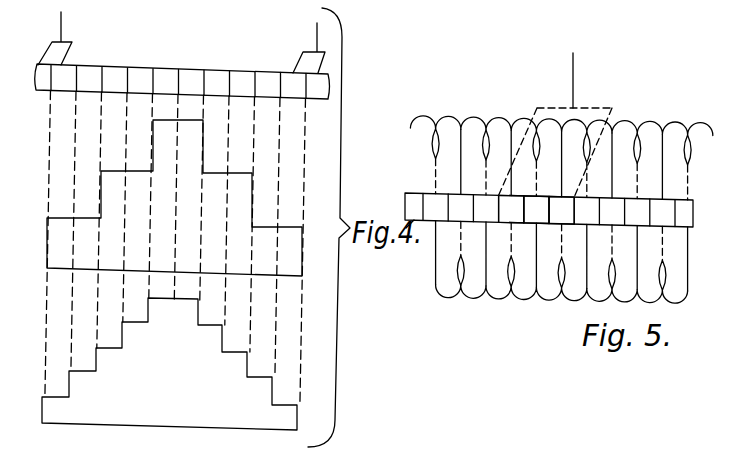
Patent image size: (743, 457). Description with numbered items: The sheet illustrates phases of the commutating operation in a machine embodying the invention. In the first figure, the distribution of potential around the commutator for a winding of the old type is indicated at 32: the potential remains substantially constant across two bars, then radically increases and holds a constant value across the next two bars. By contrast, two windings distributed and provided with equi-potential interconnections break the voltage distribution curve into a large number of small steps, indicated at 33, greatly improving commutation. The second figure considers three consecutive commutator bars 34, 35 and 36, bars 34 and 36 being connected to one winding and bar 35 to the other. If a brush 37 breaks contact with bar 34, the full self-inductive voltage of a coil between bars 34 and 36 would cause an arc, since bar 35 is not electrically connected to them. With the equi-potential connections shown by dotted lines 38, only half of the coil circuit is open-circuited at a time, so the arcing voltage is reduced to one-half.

In FIG. 4, the potential distribution of the old-type winding 32 is at (238, 192).
In FIG. 4, the stepped voltage distribution curve 33 is at (235, 369).
In FIG. 5, the commutator bar 34 is at (511, 209).
In FIG. 5, the commutator bar 35 is at (536, 210).
In FIG. 5, the commutator bar 36 is at (561, 211).
In FIG. 5, the brush 37 is at (612, 108).
In FIG. 5, the equi-potential connections 38 is at (588, 187).